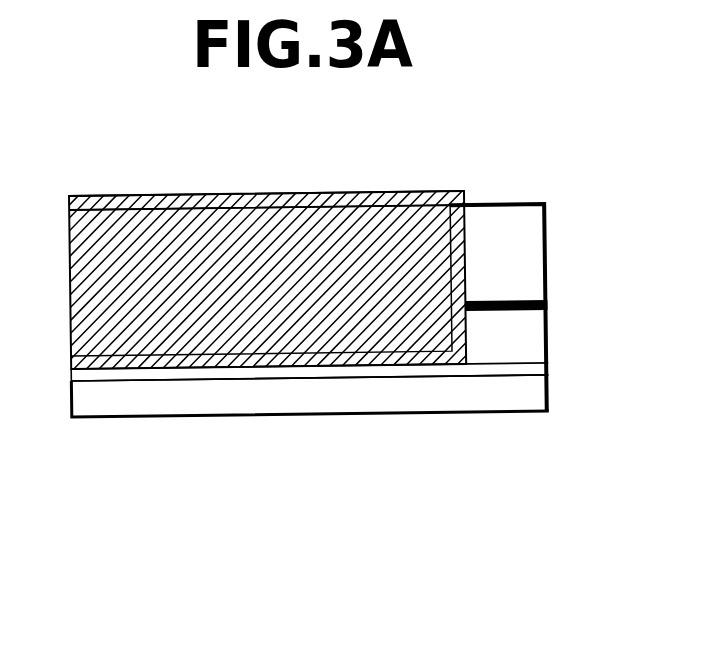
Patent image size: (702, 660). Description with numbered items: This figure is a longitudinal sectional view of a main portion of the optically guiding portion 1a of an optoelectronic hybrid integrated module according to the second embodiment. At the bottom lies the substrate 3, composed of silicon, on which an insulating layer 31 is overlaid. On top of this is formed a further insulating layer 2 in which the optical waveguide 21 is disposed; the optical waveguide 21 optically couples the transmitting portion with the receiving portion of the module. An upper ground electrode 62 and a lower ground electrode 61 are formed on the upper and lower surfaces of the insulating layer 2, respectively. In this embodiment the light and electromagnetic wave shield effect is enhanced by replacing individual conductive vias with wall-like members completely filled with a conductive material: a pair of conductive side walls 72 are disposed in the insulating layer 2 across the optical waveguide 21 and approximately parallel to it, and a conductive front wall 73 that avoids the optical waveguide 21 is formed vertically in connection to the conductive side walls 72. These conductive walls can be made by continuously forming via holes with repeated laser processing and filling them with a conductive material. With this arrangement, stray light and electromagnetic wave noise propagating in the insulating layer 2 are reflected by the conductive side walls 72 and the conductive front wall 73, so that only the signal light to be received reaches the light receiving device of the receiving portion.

The optically guiding portion 1a is at (327, 450).
The insulating layer 2 is at (535, 237).
The optical waveguide 21 is at (525, 302).
The substrate 3 is at (210, 400).
The insulating layer 31 is at (93, 378).
The lower ground electrode 61 is at (425, 363).
The upper ground electrode 62 is at (315, 192).
The conductive side walls 72 is at (132, 243).
The conductive front wall 73 is at (462, 230).